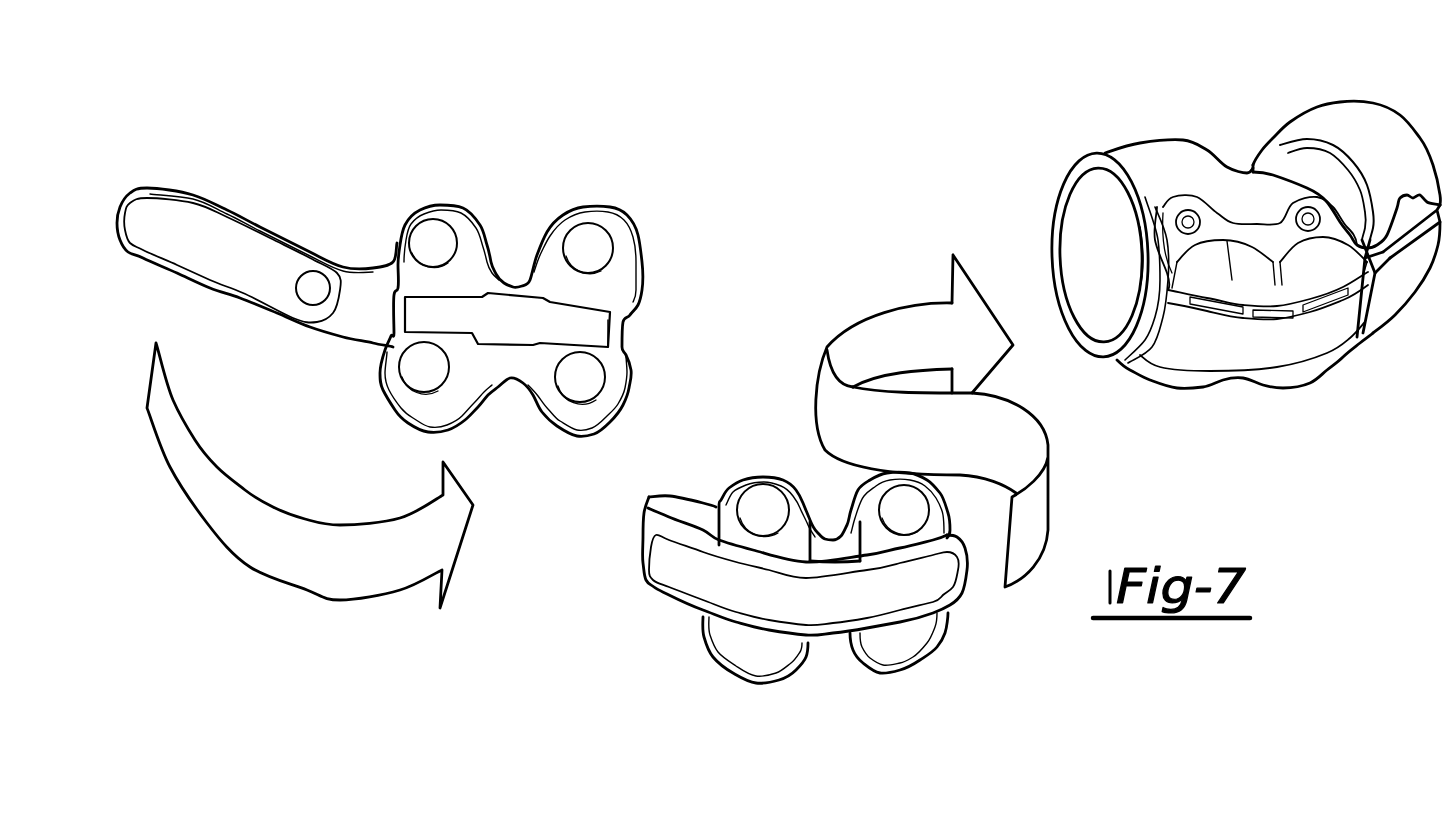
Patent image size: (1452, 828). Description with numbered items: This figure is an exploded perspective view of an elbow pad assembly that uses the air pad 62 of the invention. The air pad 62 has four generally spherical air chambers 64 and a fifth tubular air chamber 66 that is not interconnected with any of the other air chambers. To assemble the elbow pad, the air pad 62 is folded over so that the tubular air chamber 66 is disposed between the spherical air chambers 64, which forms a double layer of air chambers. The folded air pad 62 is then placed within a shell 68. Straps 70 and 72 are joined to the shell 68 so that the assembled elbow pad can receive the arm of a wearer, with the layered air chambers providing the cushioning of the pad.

The air pad 62 is at (886, 690).
The spherical air chambers 64 is at (433, 227).
The tubular air chamber 66 is at (210, 230).
The shell 68 is at (1160, 396).
The strap 70 is at (1330, 120).
The strap 72 is at (1150, 153).